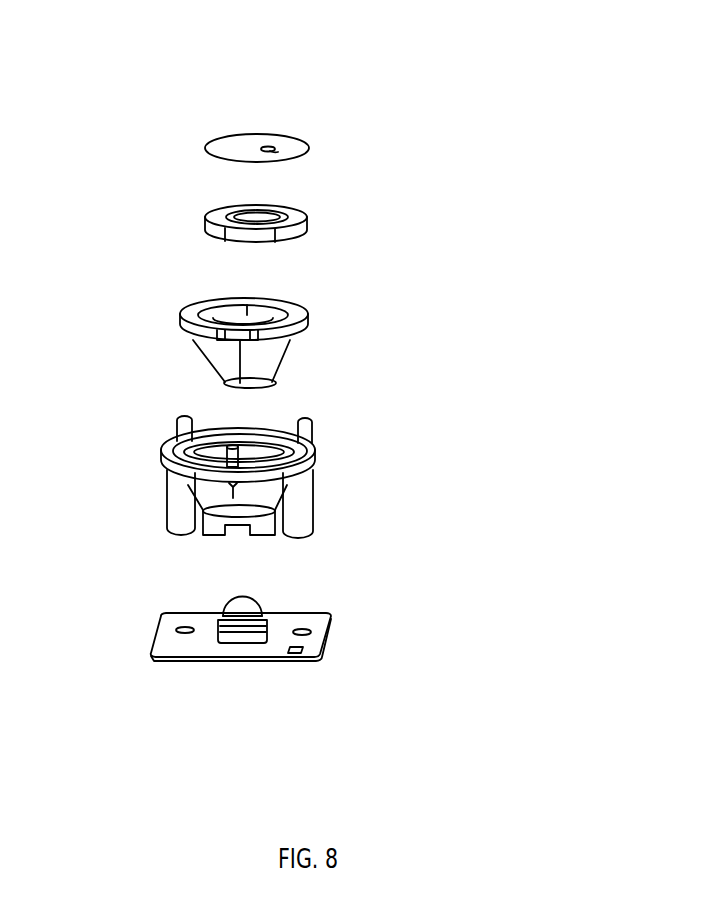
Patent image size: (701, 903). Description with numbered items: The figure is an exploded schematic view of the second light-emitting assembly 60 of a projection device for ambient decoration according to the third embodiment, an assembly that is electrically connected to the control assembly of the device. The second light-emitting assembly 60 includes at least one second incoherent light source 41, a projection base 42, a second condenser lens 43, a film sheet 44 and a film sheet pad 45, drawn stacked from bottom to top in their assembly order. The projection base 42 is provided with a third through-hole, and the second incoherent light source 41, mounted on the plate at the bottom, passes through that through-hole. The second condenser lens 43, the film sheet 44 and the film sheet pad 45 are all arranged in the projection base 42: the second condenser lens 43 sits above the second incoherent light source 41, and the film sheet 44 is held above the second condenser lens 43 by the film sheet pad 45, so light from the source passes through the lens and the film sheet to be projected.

The second light-emitting assembly 60 is at (147, 98).
The second incoherent light source 41 is at (300, 612).
The projection base 42 is at (297, 480).
The second condenser lens 43 is at (260, 360).
The film sheet 44 is at (293, 140).
The film sheet pad 45 is at (307, 230).